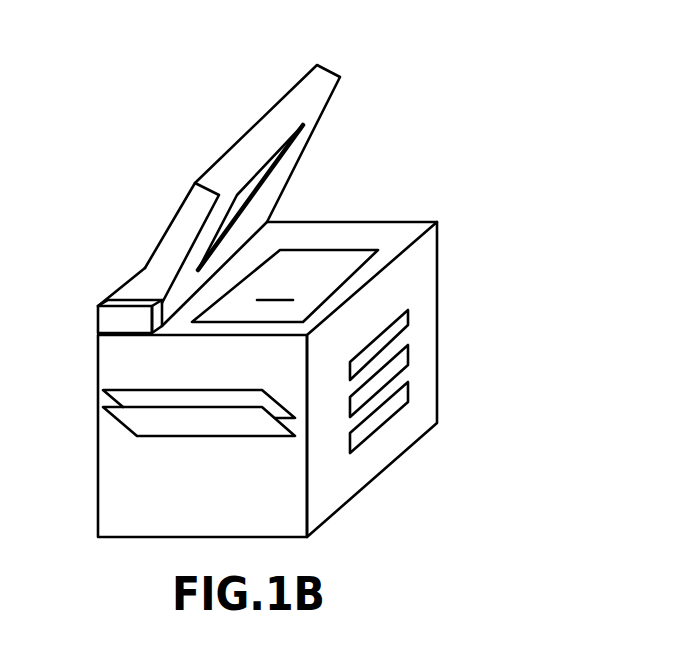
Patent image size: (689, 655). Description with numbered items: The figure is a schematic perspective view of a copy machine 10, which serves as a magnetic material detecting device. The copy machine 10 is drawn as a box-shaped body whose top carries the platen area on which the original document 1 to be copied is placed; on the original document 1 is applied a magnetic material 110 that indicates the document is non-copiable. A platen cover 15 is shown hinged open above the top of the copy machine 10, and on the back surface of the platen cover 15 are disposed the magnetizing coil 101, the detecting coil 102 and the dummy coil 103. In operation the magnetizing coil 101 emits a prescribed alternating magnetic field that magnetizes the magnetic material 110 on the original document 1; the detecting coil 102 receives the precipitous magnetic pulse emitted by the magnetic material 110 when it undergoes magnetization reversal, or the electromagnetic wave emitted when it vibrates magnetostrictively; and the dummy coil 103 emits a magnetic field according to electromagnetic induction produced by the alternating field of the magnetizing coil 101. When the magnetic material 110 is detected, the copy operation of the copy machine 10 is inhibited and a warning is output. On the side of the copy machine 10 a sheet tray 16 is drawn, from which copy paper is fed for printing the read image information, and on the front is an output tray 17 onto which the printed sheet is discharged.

The original document 1 is at (330, 252).
The copy machine 10 is at (438, 278).
The platen cover 15 is at (337, 172).
The sheet tray 16 is at (408, 352).
The output tray 17 is at (178, 390).
The magnetizing coil 101 is at (363, 197).
The detecting coil 102 is at (363, 197).
The dummy coil 103 is at (292, 156).
The magnetic material 110 is at (285, 298).